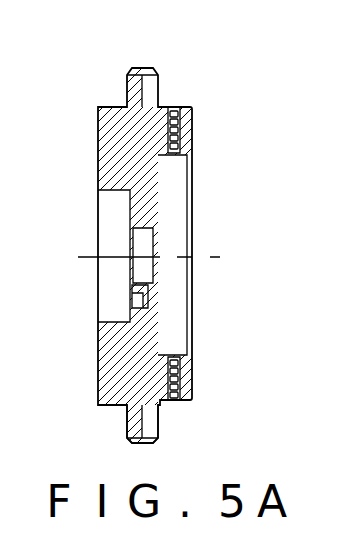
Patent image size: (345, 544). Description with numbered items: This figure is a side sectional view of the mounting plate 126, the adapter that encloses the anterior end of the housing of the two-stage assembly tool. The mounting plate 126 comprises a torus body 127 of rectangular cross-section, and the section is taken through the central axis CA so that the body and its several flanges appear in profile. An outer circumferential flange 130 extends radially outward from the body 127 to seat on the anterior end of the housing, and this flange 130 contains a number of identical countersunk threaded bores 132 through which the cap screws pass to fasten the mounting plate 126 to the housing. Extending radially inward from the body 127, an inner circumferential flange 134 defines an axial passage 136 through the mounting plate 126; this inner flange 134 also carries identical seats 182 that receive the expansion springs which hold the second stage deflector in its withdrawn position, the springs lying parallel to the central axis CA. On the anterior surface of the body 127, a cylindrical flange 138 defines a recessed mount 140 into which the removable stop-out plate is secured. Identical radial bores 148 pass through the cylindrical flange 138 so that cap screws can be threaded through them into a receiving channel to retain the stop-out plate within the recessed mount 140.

The mounting plate 126 is at (186, 59).
The torus body 127 is at (122, 370).
The outer circumferential flange 130 is at (143, 445).
The countersunk threaded bores 132 is at (150, 90).
The inner circumferential flange 134 is at (155, 307).
The axial passage 136 is at (150, 243).
The cylindrical flange 138 is at (203, 373).
The recessed mount 140 is at (173, 336).
The radial bores 148 is at (188, 145).
The seats 182 is at (130, 306).
The central axis CA is at (87, 254).